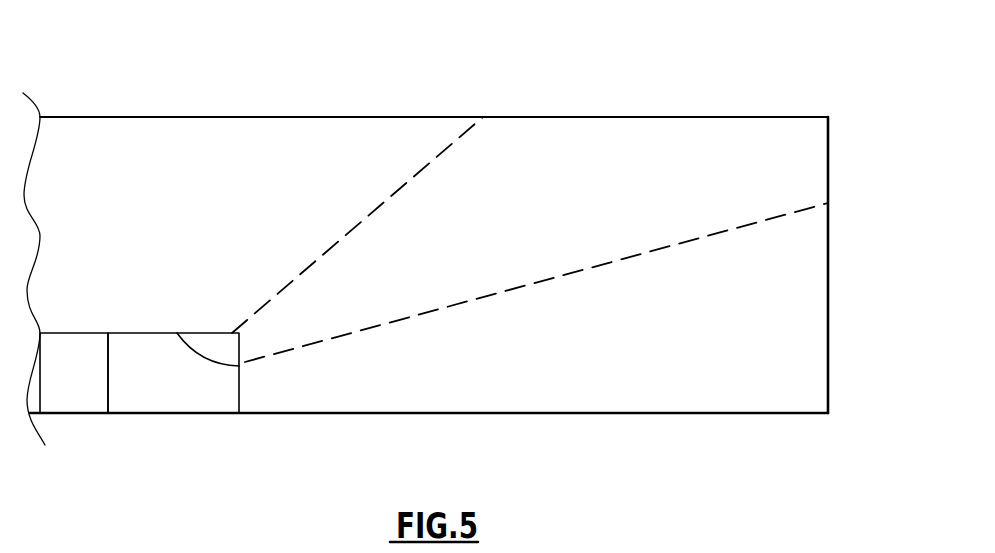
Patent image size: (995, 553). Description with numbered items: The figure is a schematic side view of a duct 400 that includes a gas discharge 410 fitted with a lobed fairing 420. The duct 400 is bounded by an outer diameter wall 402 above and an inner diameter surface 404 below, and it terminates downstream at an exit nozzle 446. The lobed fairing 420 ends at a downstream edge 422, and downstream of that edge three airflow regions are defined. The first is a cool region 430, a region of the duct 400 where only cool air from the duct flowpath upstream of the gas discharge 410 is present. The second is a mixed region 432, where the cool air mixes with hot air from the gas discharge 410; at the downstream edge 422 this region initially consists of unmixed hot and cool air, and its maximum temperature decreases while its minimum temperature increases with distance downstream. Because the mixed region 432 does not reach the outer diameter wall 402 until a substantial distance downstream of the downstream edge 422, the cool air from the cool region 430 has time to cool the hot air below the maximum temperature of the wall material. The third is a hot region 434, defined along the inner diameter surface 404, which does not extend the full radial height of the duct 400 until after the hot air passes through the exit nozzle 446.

The duct 400 is at (243, 86).
The outer diameter wall 402 is at (422, 117).
The inner diameter surface 404 is at (481, 414).
The gas discharge 410 is at (72, 397).
The lobed fairing 420 is at (177, 397).
The downstream edge 422 is at (239, 388).
The cool region 430 is at (195, 245).
The mixed region 432 is at (512, 245).
The hot region 434 is at (657, 357).
The exit nozzle 446 is at (830, 286).